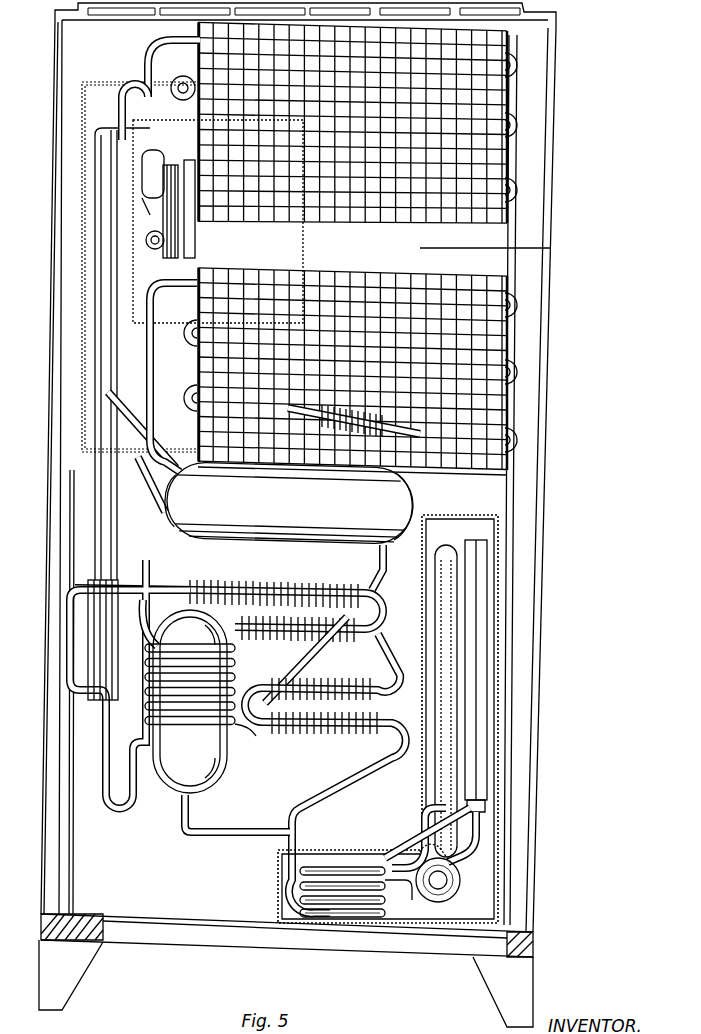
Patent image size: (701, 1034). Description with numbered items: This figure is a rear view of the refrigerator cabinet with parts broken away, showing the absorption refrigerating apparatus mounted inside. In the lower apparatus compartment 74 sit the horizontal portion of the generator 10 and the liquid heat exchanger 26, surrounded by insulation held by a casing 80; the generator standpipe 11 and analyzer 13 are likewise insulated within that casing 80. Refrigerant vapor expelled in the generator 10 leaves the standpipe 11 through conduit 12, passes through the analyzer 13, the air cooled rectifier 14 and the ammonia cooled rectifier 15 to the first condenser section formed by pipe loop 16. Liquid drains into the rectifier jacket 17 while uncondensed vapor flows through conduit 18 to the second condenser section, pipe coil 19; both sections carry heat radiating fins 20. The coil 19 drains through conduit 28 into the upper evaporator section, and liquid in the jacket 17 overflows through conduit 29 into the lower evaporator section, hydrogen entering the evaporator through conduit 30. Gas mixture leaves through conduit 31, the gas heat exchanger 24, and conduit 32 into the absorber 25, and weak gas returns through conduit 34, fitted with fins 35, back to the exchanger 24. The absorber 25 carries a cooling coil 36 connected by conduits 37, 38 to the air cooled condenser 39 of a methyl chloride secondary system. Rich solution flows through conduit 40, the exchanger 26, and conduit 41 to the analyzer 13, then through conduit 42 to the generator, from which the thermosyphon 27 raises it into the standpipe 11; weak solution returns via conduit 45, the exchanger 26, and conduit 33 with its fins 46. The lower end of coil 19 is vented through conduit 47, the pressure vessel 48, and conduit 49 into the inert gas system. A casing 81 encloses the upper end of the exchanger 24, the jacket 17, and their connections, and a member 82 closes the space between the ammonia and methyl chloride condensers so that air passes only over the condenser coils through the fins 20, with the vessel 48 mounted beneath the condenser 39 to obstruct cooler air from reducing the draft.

The generator 10 is at (455, 892).
The generator standpipe 11 is at (488, 800).
The conduit 12 is at (465, 541).
The analyzer 13 is at (435, 646).
The air cooled rectifier 14 is at (354, 415).
The ammonia cooled rectifier 15 is at (196, 243).
The pipe loop 16 is at (525, 190).
The rectifier jacket 17 is at (185, 232).
The conduit 18 is at (148, 40).
The pipe coil 19 is at (525, 77).
The heat radiating fins 20 is at (412, 222).
The gas heat exchanger 24 is at (90, 527).
The absorber 25 is at (215, 785).
The liquid heat exchanger 26 is at (347, 925).
The thermosyphon 27 is at (480, 568).
The conduit 28 is at (168, 128).
The conduit 29 is at (150, 238).
The conduit 30 is at (143, 197).
The conduit 31 is at (130, 127).
The conduit 32 is at (100, 713).
The conduit 33 is at (330, 790).
The conduit 34 is at (158, 590).
The heat radiating fins 35 is at (214, 583).
The cooling coil 36 is at (236, 663).
The conduit 37 is at (152, 626).
The conduit 38 is at (138, 800).
The air cooled condenser 39 is at (520, 370).
The conduit 40 is at (230, 835).
The conduit 41 is at (390, 852).
The conduit 42 is at (420, 815).
The conduit 45 is at (404, 884).
The heat radiating fins 46 is at (360, 722).
The conduit 47 is at (123, 104).
The pressure vessel 48 is at (300, 535).
The conduit 49 is at (383, 565).
The apparatus compartment 74 is at (175, 935).
The casing 80 is at (314, 850).
The casing 81 is at (80, 352).
The member 82 is at (490, 249).